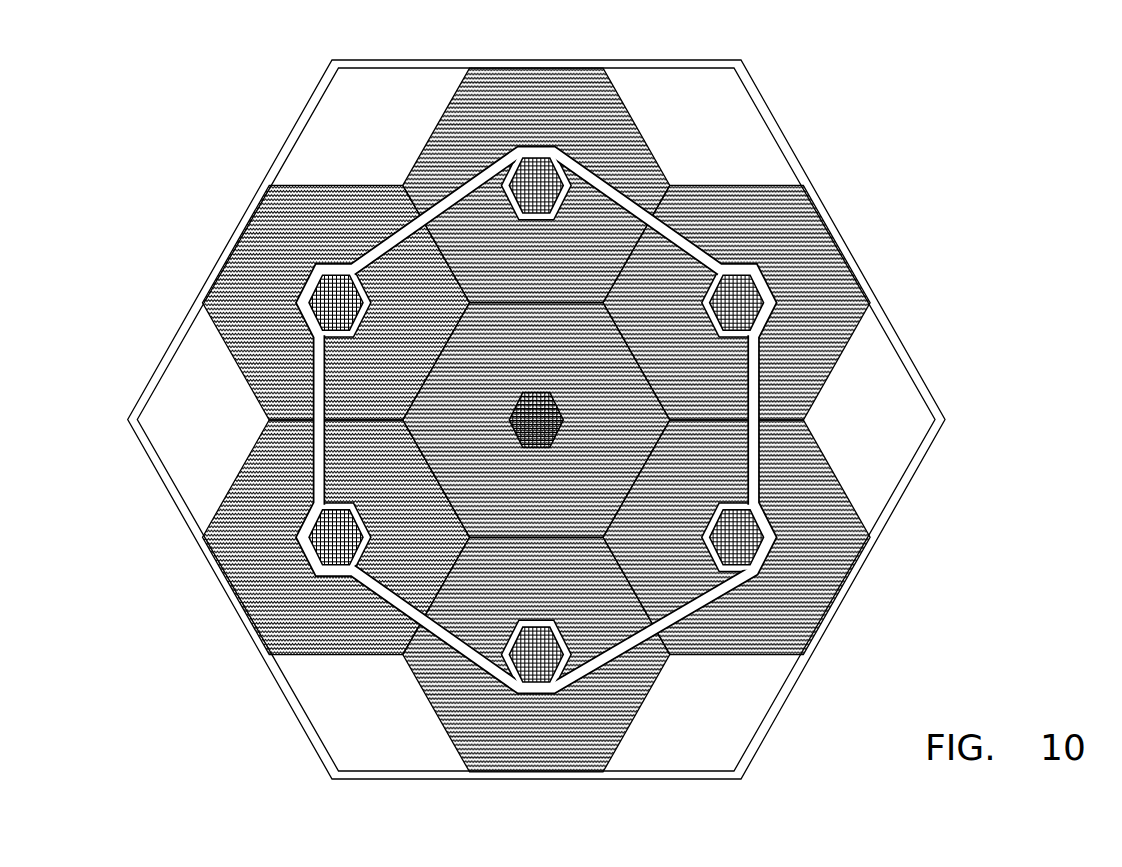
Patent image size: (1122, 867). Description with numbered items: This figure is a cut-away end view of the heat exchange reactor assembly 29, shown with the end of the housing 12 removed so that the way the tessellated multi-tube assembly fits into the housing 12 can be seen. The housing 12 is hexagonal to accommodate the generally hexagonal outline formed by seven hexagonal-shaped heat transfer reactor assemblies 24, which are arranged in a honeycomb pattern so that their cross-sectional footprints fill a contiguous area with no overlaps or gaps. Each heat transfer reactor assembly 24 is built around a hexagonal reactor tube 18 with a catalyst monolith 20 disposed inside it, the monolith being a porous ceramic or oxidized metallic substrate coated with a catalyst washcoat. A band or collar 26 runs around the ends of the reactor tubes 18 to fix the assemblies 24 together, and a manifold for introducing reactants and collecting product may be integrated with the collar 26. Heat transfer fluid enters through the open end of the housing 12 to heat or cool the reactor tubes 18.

The housing 12 is at (884, 313).
The reactor tube 18 is at (571, 177).
The catalyst monolith 20 is at (548, 172).
The heat transfer reactor assembly 24 is at (440, 108).
The band or collar 26 is at (675, 232).
The heat exchange reactor assembly 29 is at (552, 418).